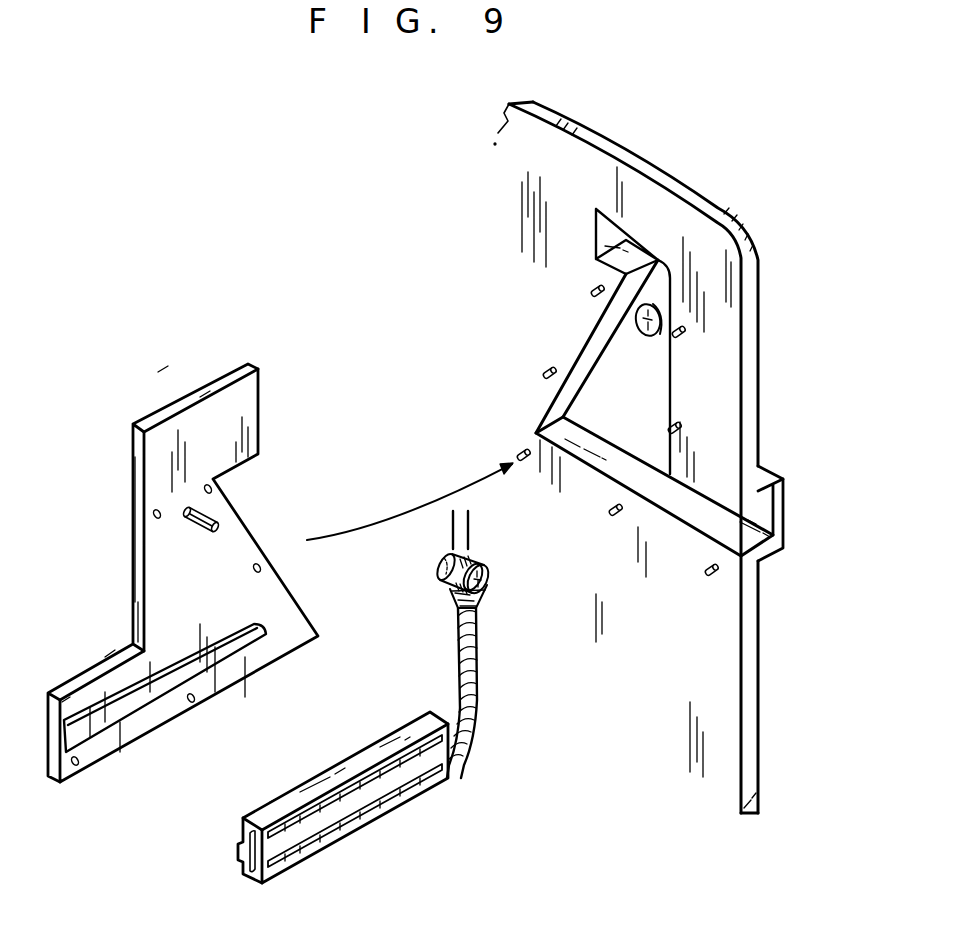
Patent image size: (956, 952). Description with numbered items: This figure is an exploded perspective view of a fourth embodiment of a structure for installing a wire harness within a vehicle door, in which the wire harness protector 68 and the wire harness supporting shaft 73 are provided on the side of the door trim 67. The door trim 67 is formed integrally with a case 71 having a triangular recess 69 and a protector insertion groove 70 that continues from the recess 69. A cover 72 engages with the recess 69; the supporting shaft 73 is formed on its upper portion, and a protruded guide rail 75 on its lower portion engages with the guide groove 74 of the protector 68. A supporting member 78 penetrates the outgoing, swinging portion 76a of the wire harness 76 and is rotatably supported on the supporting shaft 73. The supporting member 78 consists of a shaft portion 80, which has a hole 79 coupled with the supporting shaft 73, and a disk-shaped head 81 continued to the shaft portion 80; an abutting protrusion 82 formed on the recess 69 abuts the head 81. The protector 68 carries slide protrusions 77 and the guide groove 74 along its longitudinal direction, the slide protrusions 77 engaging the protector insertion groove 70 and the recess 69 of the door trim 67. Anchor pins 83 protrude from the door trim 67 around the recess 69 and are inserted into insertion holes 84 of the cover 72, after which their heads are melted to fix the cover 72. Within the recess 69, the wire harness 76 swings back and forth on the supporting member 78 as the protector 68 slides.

The door trim 67 is at (635, 157).
The wire harness protector 68 is at (314, 768).
The triangular recess 69 is at (617, 337).
The protector insertion groove 70 is at (741, 513).
The case 71 is at (777, 478).
The cover 72 is at (124, 561).
The wire harness supporting shaft 73 is at (206, 506).
The guide groove 74 is at (232, 838).
The protruded guide rail 75 is at (220, 642).
The wire harness 76 is at (445, 525).
The outgoing portion 76a is at (472, 707).
The slide protrusions 77 is at (388, 786).
The supporting member 78 is at (476, 584).
The hole 79 is at (439, 590).
The shaft portion 80 is at (437, 569).
The disk-shaped head 81 is at (481, 568).
The abutting protrusion 82 is at (641, 328).
The anchor pins 83 is at (537, 368).
The insertion holes 84 is at (410, 529).